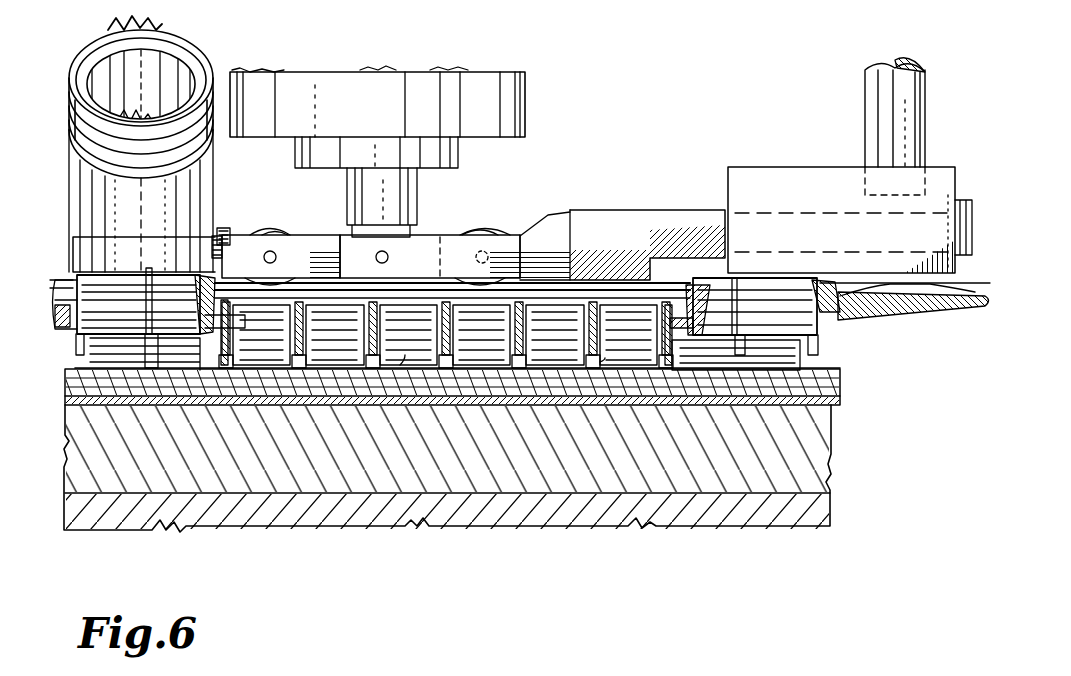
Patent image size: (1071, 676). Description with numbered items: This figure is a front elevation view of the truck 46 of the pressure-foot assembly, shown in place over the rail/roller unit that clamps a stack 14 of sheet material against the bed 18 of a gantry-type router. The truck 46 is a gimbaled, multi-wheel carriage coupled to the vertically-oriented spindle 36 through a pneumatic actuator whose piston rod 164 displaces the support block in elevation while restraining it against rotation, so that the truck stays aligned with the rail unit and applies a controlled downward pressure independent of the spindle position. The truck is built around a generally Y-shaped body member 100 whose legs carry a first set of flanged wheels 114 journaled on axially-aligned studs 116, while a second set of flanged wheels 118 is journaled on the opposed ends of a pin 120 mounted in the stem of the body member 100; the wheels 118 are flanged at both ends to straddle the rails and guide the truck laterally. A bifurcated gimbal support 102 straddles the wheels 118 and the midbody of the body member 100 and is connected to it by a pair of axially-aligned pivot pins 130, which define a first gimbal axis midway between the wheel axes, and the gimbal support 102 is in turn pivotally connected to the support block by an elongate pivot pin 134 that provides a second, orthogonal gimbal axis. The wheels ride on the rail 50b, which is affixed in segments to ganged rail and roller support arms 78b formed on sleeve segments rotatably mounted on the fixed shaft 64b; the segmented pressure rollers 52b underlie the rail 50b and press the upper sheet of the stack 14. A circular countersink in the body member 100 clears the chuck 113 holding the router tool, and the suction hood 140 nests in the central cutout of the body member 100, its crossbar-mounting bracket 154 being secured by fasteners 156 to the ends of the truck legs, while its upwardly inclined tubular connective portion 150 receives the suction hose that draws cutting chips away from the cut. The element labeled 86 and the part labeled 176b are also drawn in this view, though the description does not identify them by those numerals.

The stack 14 is at (843, 383).
The bed 18 is at (835, 400).
The spindle 36 is at (535, 108).
The truck 46 is at (530, 175).
The rail 50b is at (598, 292).
The pressure rollers 52b is at (335, 365).
The shaft 64b is at (840, 330).
The rail and roller support arms 78b is at (400, 365).
The guide 86 is at (600, 362).
The body member 100 is at (305, 235).
The gimbal support 102 is at (528, 235).
The chuck 113 is at (417, 188).
The wheels 114 is at (258, 233).
The studs 116 is at (264, 253).
The flanged wheels 118 is at (475, 235).
The pin 120 is at (490, 256).
The pivot pins 130 is at (388, 255).
The pivot pin 134 is at (760, 212).
The suction hood 140 is at (75, 248).
The tubular connective portion 150 is at (155, 206).
The crossbar-mounting bracket 154 is at (224, 228).
The fasteners 156 is at (212, 256).
The piston rod 164 is at (865, 108).
The clamp 176b is at (170, 266).